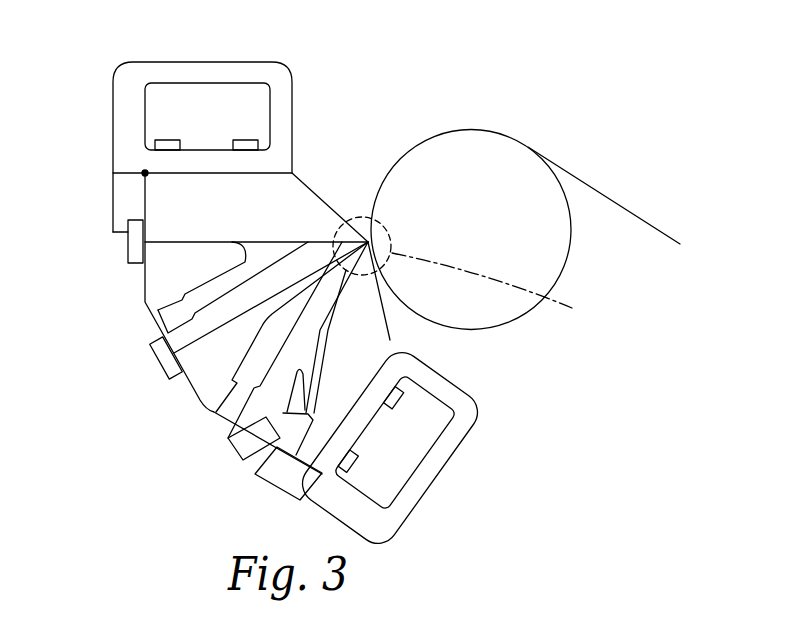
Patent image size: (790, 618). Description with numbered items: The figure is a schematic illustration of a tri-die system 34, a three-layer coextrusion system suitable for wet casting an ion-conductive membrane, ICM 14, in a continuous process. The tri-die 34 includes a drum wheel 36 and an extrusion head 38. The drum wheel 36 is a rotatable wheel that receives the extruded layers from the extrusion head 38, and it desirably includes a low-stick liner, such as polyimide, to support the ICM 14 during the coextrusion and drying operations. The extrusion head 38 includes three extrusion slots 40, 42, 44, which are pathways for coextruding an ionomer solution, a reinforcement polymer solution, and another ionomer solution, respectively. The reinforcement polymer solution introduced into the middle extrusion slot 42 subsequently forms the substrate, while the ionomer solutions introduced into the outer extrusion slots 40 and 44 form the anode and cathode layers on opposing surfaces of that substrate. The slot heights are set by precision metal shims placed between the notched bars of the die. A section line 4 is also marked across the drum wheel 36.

The section line 4- 4 is at (493, 294).
The ion-conductive membrane 14 is at (627, 208).
The tri-die system 34 is at (459, 60).
The drum wheel 36 is at (495, 220).
The extrusion head 38 is at (332, 189).
The extrusion slot 40 is at (208, 271).
The extrusion slot 42 is at (247, 347).
The extrusion slot 44 is at (343, 349).